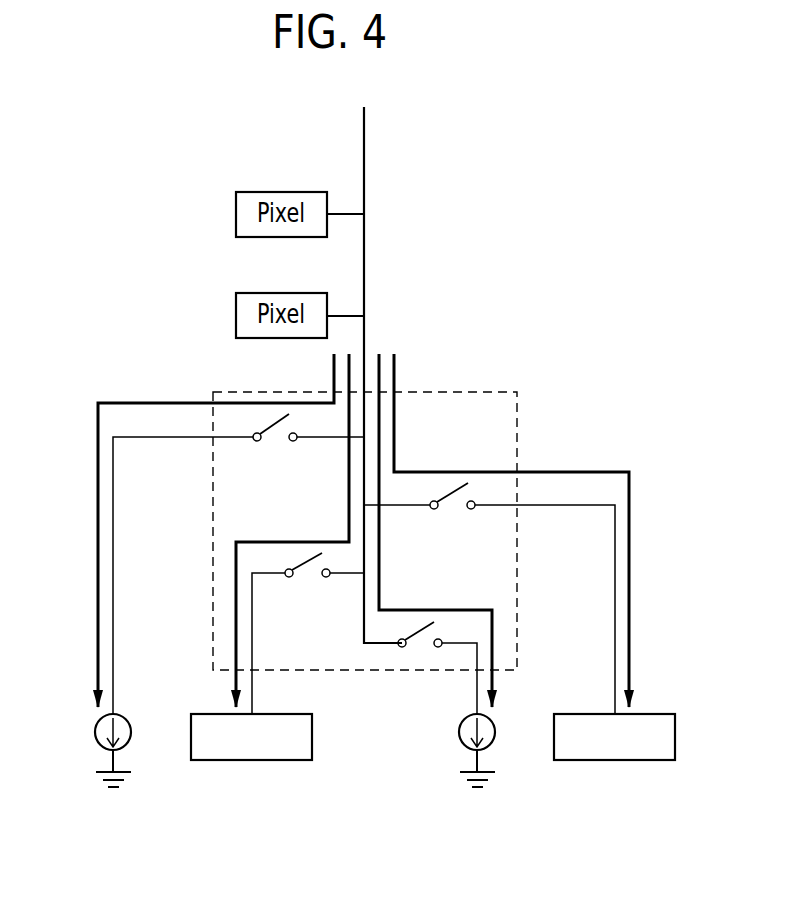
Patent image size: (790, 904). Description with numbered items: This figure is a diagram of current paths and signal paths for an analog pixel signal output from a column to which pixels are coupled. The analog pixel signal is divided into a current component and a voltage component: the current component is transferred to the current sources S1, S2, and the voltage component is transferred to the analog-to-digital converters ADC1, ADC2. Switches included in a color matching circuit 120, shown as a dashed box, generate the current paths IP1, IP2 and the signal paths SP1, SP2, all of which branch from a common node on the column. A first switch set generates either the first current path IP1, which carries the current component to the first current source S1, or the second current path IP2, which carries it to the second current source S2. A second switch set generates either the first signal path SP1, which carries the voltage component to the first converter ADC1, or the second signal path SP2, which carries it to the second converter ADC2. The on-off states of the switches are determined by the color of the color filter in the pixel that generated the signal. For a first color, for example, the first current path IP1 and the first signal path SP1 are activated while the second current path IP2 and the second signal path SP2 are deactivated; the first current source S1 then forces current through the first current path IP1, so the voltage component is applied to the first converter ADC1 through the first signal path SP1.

The color matching circuit 120 is at (502, 392).
The first current path IP1 is at (213, 531).
The second current path IP2 is at (438, 531).
The first signal path SP1 is at (290, 531).
The second signal path SP2 is at (514, 531).
The first current source S1 is at (99, 750).
The second current source S2 is at (461, 750).
The first converter ADC1 is at (251, 737).
The second converter ADC2 is at (614, 737).